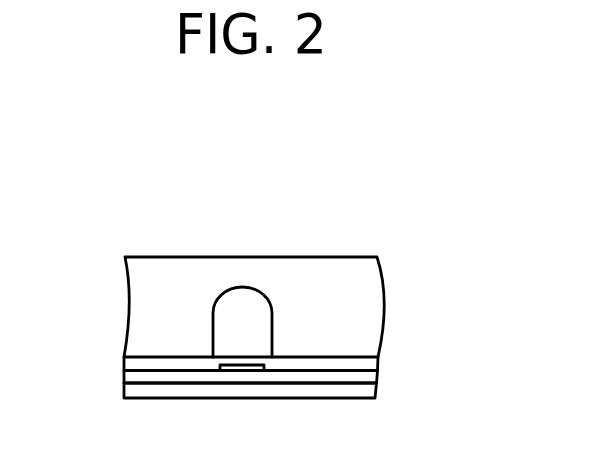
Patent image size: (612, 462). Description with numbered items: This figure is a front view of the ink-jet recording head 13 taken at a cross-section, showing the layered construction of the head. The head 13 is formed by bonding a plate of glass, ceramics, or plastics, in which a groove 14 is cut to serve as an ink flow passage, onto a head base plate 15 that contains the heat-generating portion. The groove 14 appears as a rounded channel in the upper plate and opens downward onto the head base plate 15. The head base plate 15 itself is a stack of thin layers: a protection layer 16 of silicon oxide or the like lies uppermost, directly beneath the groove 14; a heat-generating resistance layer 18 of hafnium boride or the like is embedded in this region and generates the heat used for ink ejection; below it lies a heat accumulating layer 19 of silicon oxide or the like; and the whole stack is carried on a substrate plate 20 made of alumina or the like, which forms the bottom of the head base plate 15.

The head 13 is at (162, 257).
The groove 14 is at (245, 298).
The head base plate 15 is at (244, 388).
The protection layer 16 is at (123, 363).
The heat-generating resistance layer 18 is at (233, 370).
The heat accumulating layer 19 is at (123, 380).
The substrate plate 20 is at (312, 400).